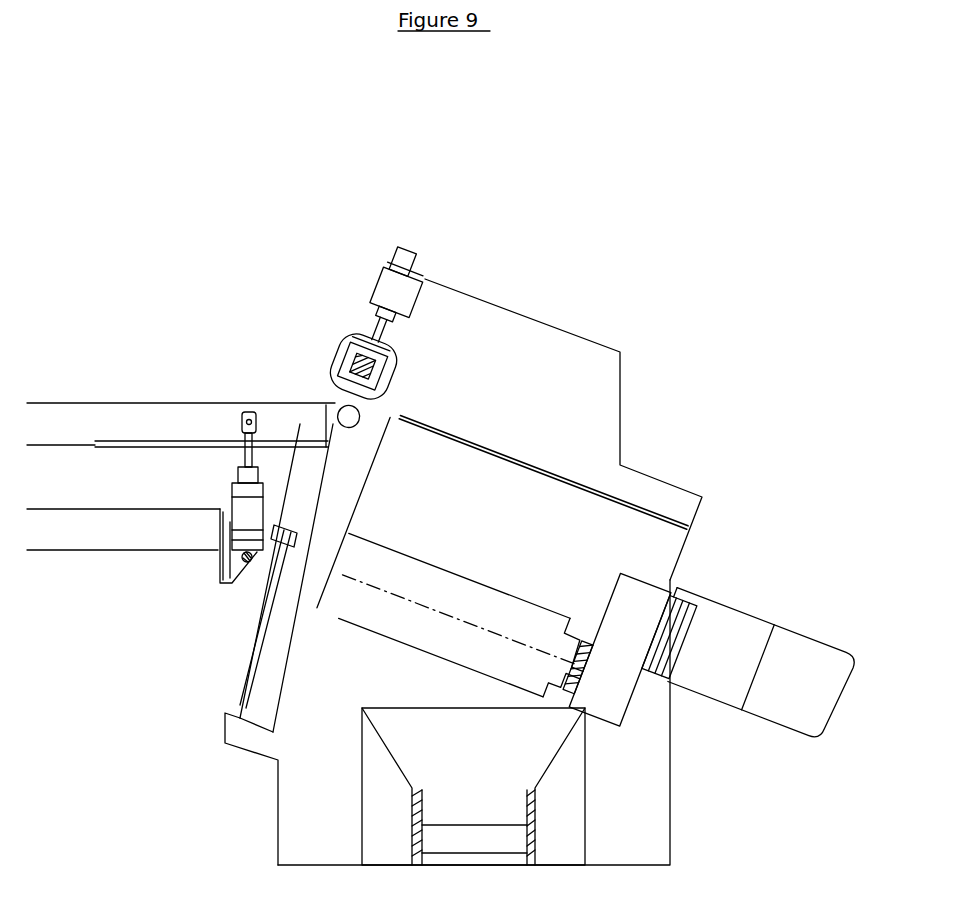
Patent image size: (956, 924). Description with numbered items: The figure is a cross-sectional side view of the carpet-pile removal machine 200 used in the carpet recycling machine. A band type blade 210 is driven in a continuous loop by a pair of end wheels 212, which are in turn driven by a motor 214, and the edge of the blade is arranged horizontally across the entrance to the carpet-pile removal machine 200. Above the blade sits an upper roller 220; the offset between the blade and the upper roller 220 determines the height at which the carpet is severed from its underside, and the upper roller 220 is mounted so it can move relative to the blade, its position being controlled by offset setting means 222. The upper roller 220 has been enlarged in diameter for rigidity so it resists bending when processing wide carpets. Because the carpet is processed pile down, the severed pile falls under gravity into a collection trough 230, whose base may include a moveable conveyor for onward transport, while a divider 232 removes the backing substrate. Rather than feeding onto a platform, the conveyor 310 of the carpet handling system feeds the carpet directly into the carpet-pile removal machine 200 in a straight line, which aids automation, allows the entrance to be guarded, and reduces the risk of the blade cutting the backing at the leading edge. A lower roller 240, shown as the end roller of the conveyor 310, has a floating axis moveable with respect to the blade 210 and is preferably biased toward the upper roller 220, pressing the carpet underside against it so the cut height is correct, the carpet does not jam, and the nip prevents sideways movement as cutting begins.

The carpet-pile removal machine 200 is at (720, 219).
The band type blade 210 is at (375, 410).
The end wheels 212 is at (282, 632).
The motor 214 is at (715, 623).
The upper roller 220 is at (342, 352).
The offset setting means 222 is at (402, 292).
The collection trough 230 is at (480, 797).
The divider 232 is at (538, 468).
The lower roller 240 is at (317, 402).
The conveyor 310 is at (107, 402).